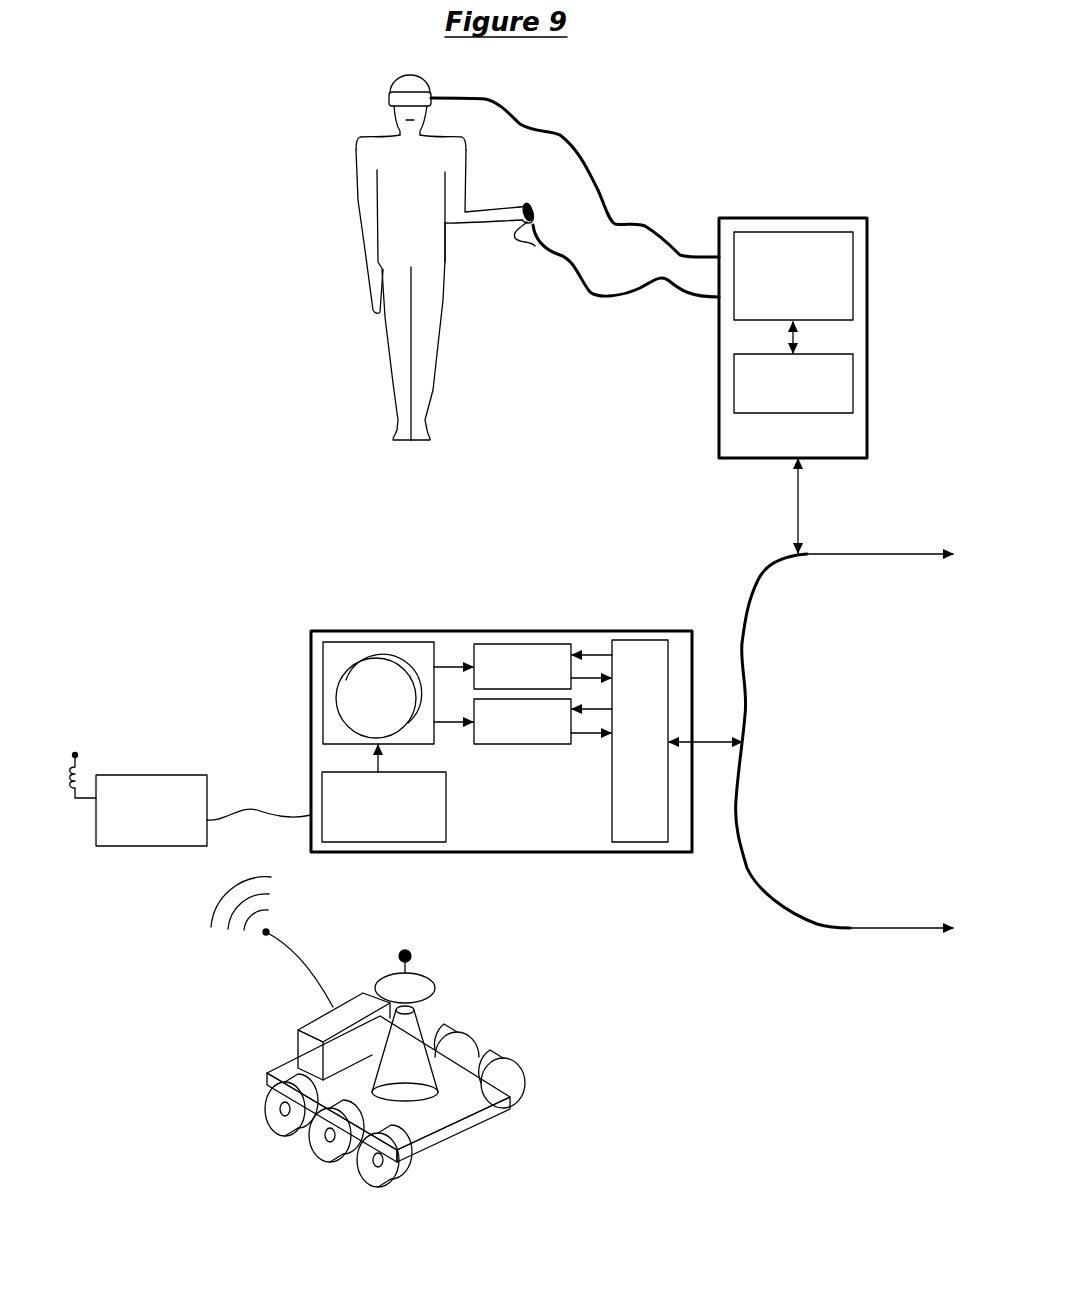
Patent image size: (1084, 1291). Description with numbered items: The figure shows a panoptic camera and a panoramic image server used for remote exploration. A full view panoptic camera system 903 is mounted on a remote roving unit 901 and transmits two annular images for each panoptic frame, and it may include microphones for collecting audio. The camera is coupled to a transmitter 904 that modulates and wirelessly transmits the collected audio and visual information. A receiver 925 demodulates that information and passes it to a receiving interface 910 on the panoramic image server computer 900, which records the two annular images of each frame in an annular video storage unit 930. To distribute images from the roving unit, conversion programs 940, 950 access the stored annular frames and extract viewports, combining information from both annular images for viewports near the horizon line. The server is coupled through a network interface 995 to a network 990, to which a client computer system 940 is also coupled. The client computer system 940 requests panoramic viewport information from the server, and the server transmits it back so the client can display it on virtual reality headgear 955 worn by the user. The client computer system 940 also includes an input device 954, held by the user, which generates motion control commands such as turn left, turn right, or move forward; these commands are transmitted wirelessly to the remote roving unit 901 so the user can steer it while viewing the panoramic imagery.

The panoramic image server computer 900 is at (505, 791).
The remote roving unit 901 is at (453, 1153).
The full view panoptic camera system 903 is at (435, 980).
The transmitter 904 is at (298, 1037).
The receiving interface 910 is at (446, 808).
The receiver 925 is at (190, 800).
The annular video storage unit 930 is at (387, 642).
The client computer system 940 is at (868, 350).
The conversion program 950 is at (522, 721).
The input device 954 is at (520, 228).
The virtual reality headgear 955 is at (390, 97).
The network 990 is at (743, 643).
The network interface 995 is at (677, 741).